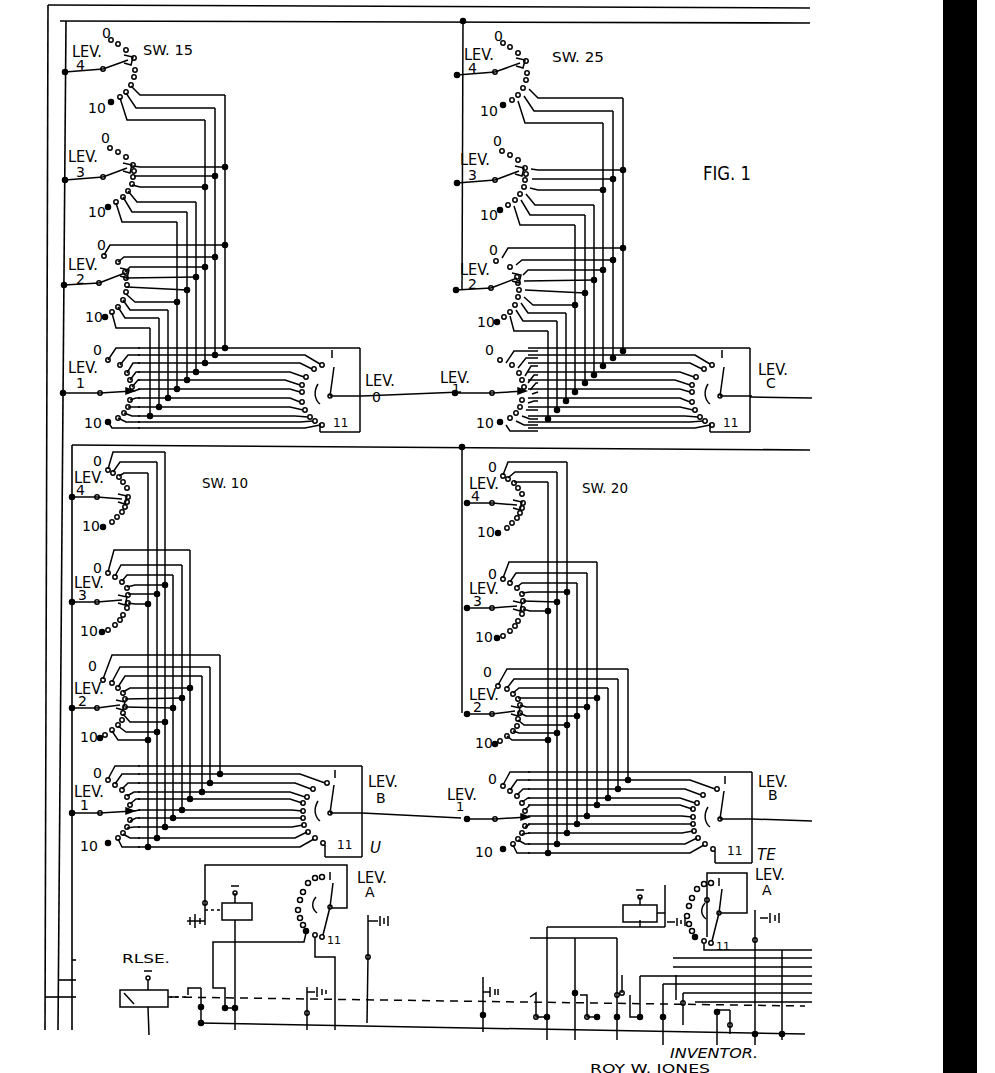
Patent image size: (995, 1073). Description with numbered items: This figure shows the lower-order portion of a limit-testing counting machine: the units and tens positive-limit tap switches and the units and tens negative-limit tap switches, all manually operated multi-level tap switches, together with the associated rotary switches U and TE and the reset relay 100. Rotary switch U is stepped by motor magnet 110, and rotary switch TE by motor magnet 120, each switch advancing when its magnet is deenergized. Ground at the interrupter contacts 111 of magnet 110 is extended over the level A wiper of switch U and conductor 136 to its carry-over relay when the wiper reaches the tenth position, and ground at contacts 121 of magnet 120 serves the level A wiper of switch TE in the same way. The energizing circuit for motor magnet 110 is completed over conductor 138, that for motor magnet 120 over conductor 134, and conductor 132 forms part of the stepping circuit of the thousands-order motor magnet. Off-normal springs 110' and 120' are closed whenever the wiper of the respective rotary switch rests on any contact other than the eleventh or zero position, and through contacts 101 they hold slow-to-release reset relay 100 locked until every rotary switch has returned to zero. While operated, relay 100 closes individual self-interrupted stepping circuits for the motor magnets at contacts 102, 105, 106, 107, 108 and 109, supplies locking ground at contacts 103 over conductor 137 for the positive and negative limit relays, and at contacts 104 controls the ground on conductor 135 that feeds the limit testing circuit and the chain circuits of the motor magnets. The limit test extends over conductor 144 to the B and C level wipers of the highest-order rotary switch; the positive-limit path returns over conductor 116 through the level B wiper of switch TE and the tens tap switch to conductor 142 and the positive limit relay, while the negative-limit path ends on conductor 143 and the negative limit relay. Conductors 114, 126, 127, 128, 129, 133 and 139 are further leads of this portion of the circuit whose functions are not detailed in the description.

The reset relay 100 is at (138, 1008).
The contacts 101 is at (193, 990).
The contacts 102 is at (230, 992).
The contacts 103 is at (310, 987).
The contacts 104 is at (483, 985).
The contacts 105 is at (530, 997).
The contacts 106 is at (582, 995).
The contacts 107 is at (622, 975).
The contacts 108 is at (676, 975).
The contacts 109 is at (738, 1020).
The motor magnet 110 is at (252, 953).
The off normal contacts 110' is at (391, 958).
The contacts 111 is at (190, 918).
The conductor from level C 114 is at (794, 400).
The conductor 116 is at (791, 826).
The motor magnet 120 is at (620, 903).
The off normal contacts 120' is at (775, 908).
The contacts 121 is at (666, 888).
The conductor 126 is at (782, 1040).
The conductor 127 is at (746, 979).
The conductor 128 is at (715, 1040).
The conductor 129 is at (662, 1038).
The conductor 132 is at (616, 1040).
The conductor 133 is at (564, 993).
The conductor 134 is at (546, 1038).
The conductor 135 is at (483, 1030).
The conductor 136 is at (335, 1026).
The conductor 137 is at (307, 1026).
The conductor 138 is at (235, 1026).
The conductor 139 is at (150, 1026).
The conductor 142 is at (790, 454).
The conductor 143 is at (783, 23).
The conductor 144 is at (729, 9).